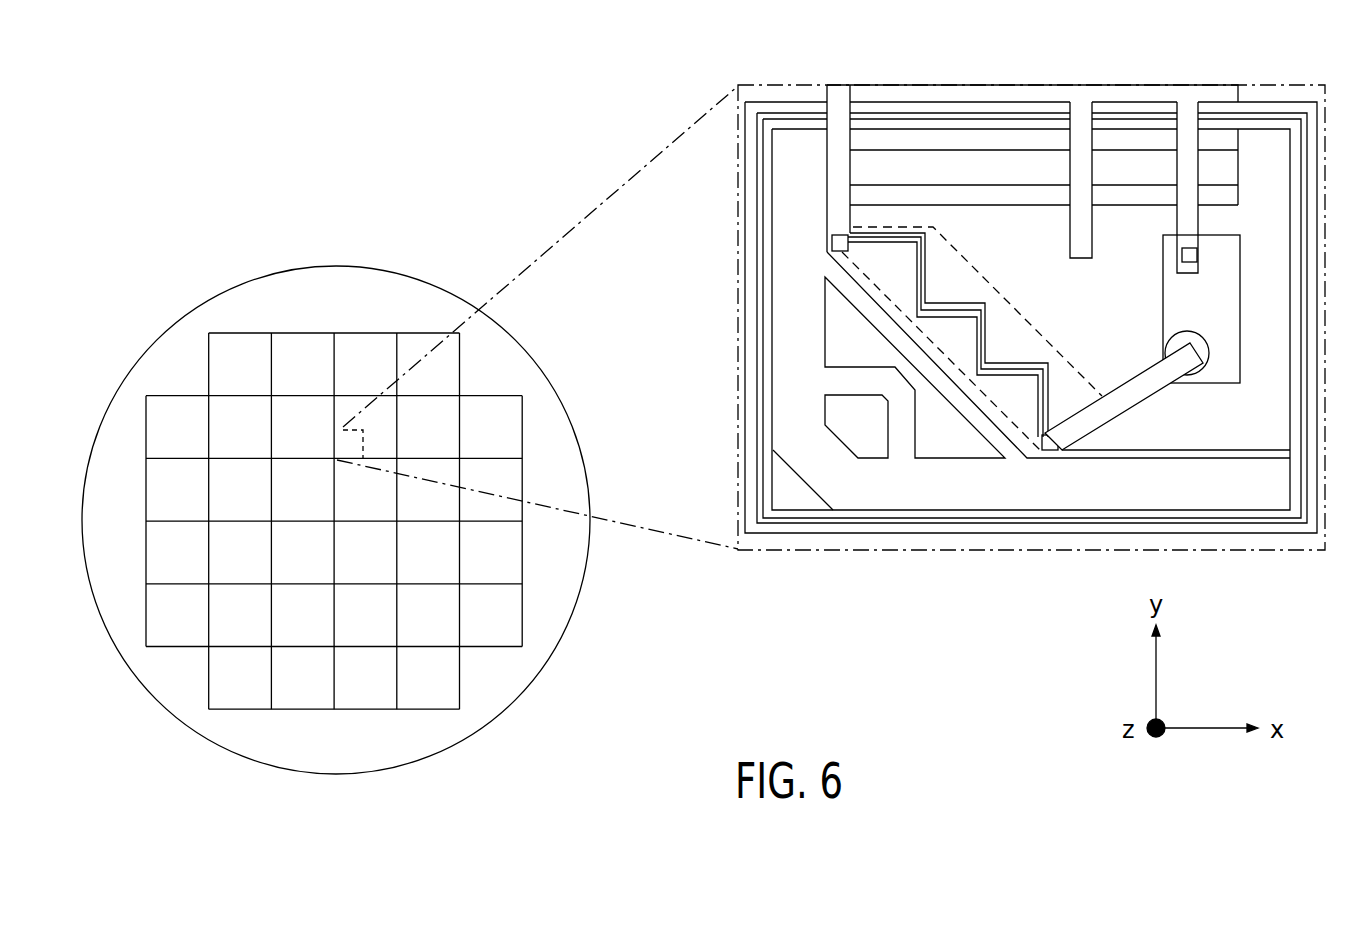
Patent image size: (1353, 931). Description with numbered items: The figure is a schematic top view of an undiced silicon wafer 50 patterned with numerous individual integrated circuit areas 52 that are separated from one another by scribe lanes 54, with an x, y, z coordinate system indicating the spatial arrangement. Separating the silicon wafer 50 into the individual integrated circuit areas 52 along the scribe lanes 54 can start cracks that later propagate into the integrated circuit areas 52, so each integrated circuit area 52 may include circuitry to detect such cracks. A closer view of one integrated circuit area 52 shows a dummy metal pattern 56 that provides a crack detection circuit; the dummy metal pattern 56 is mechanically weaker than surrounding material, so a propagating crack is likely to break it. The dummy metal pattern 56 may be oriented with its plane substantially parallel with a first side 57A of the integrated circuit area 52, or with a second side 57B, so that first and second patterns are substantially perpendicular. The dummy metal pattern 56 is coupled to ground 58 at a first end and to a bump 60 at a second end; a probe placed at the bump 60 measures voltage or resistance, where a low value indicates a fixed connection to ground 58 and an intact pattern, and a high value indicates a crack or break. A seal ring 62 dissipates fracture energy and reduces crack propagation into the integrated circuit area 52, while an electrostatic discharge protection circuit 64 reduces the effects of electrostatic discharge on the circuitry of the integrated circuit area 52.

The silicon wafer 50 is at (105, 633).
The integrated circuit area 52 is at (254, 380).
The scribe lane 54 is at (146, 478).
The dummy metal pattern 56 is at (1017, 362).
The first side 57A is at (1034, 528).
The second side 57B is at (760, 273).
The ground 58 is at (926, 85).
The bump 60 is at (1203, 360).
The seal ring 62 is at (818, 468).
The electrostatic discharge (ESD) protection circuit 64 is at (1243, 322).